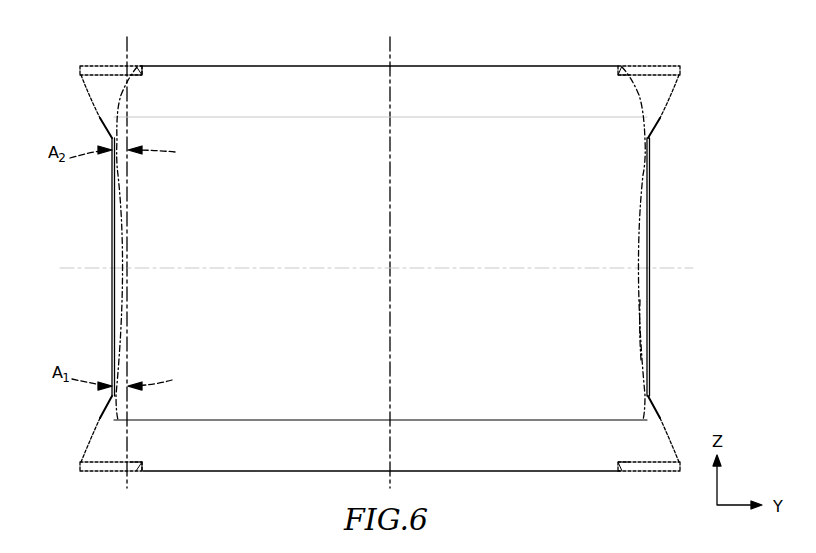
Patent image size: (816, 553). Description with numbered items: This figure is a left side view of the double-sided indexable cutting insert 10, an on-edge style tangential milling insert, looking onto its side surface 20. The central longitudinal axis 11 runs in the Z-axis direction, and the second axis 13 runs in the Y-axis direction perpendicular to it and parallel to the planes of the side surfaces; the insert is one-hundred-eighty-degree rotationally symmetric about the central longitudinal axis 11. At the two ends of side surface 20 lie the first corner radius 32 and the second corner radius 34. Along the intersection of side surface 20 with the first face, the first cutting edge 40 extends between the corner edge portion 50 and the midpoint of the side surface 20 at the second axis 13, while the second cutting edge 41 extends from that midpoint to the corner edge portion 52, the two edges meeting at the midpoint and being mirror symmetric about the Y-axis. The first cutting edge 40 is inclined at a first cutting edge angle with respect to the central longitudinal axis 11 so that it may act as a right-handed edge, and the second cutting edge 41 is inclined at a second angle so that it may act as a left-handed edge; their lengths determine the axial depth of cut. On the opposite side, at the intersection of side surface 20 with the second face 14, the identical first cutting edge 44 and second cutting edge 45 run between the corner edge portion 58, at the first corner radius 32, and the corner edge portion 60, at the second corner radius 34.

The cutting insert 10 is at (70, 474).
The central longitudinal axis 11 is at (129, 52).
The second axis 13 is at (668, 275).
The second face 14 is at (652, 237).
The side surface 20 is at (481, 142).
The first corner radius 32 is at (218, 462).
The second corner radius 34 is at (205, 76).
The first cutting edge 40 is at (122, 340).
The second cutting edge 41 is at (112, 196).
The first cutting edge 44 is at (644, 196).
The second cutting edge 45 is at (644, 352).
The corner edge portion 50 is at (105, 412).
The corner edge portion 52 is at (120, 96).
The corner edge portion 58 is at (632, 456).
The corner edge portion 60 is at (636, 98).